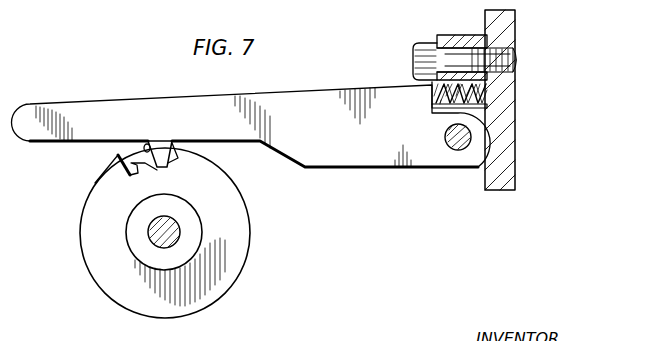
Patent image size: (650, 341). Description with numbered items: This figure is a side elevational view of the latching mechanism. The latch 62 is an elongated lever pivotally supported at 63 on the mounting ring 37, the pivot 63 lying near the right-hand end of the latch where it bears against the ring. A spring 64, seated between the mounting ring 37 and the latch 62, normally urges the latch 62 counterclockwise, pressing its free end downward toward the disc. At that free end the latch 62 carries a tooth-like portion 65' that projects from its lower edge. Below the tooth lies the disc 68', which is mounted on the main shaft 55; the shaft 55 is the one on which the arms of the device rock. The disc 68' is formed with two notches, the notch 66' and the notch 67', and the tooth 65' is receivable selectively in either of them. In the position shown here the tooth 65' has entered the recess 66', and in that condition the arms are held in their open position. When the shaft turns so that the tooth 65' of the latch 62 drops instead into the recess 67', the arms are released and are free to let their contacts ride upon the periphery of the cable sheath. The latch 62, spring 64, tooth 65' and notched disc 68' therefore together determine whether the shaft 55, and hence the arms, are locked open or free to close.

The mounting ring 37 is at (505, 155).
The latch 62 is at (232, 95).
The tooth-like portion 65' is at (151, 121).
The notch 66' is at (204, 156).
The notch 67' is at (115, 167).
The disc 68' is at (178, 233).
The main shaft 55 is at (152, 238).
The pivot 63 is at (458, 151).
The spring 64 is at (487, 90).